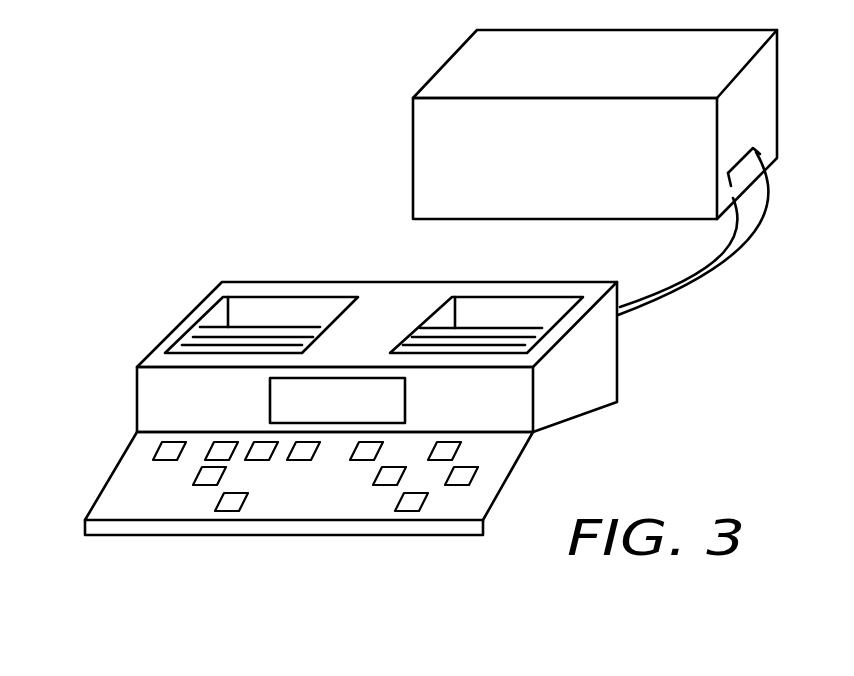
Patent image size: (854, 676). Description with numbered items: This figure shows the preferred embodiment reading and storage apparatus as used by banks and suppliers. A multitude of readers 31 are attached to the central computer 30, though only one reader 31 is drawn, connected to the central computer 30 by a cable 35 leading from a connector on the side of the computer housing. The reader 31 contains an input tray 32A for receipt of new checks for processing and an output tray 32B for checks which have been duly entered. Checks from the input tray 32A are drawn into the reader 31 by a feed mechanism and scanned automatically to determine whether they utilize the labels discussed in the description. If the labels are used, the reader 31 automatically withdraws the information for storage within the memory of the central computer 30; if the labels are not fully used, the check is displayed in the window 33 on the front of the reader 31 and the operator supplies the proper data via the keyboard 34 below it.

The central computer 30 is at (437, 73).
The reader 31 is at (137, 393).
The input tray 32A is at (507, 315).
The output tray 32B is at (350, 250).
The window 33 is at (357, 405).
The keyboard 34 is at (185, 507).
The cable 35 is at (715, 273).